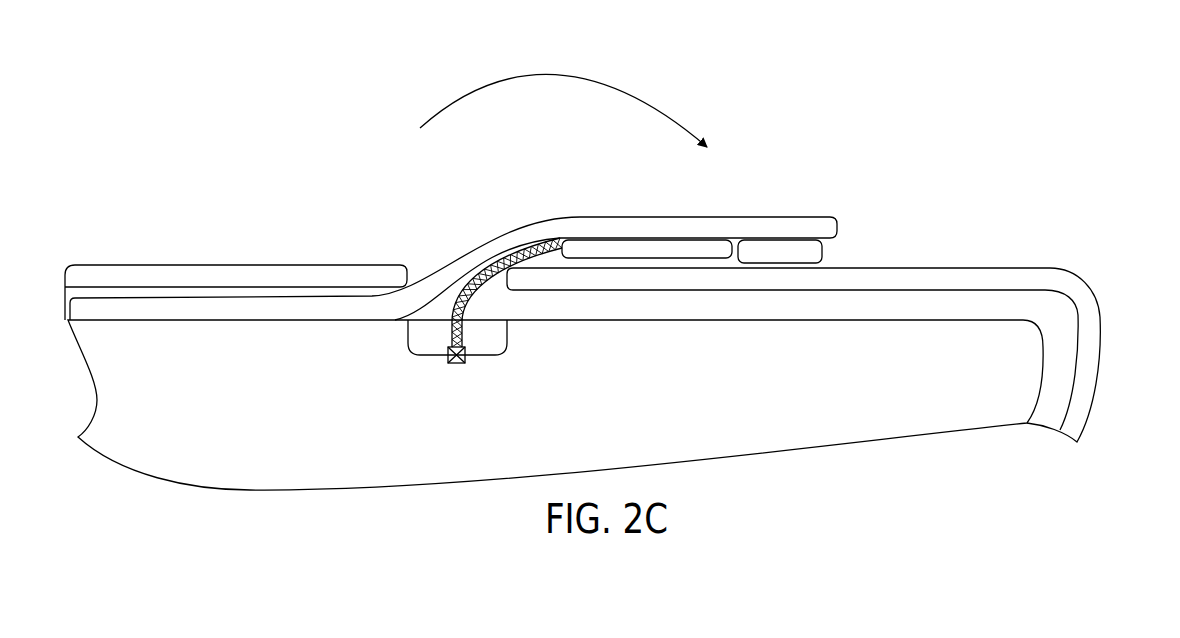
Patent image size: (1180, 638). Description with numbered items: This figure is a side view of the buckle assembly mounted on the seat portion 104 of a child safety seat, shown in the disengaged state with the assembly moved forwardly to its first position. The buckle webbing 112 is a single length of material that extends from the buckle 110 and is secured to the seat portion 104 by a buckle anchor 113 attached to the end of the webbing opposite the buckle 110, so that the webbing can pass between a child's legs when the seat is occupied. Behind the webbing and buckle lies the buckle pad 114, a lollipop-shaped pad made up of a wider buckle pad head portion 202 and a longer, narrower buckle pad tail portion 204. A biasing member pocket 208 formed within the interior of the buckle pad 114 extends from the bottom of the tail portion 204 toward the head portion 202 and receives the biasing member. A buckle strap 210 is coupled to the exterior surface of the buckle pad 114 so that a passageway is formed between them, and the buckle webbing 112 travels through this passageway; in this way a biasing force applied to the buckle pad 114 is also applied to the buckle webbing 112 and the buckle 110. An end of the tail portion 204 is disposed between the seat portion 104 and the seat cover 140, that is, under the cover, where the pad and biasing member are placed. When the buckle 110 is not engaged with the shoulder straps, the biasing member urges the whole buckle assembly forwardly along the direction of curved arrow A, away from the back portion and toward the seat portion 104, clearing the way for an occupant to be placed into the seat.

The curved arrow direction A is at (563, 75).
The seat portion 104 is at (1027, 362).
The buckle 110 is at (813, 253).
The buckle webbing 112 is at (540, 243).
The buckle anchor 113 is at (458, 365).
The buckle pad 114 is at (820, 228).
The seat cover 140 is at (232, 280).
The buckle pad head portion 202 is at (757, 210).
The buckle pad tail portion 204 is at (431, 257).
The biasing member pocket 208 is at (1018, 105).
The buckle strap 210 is at (670, 248).